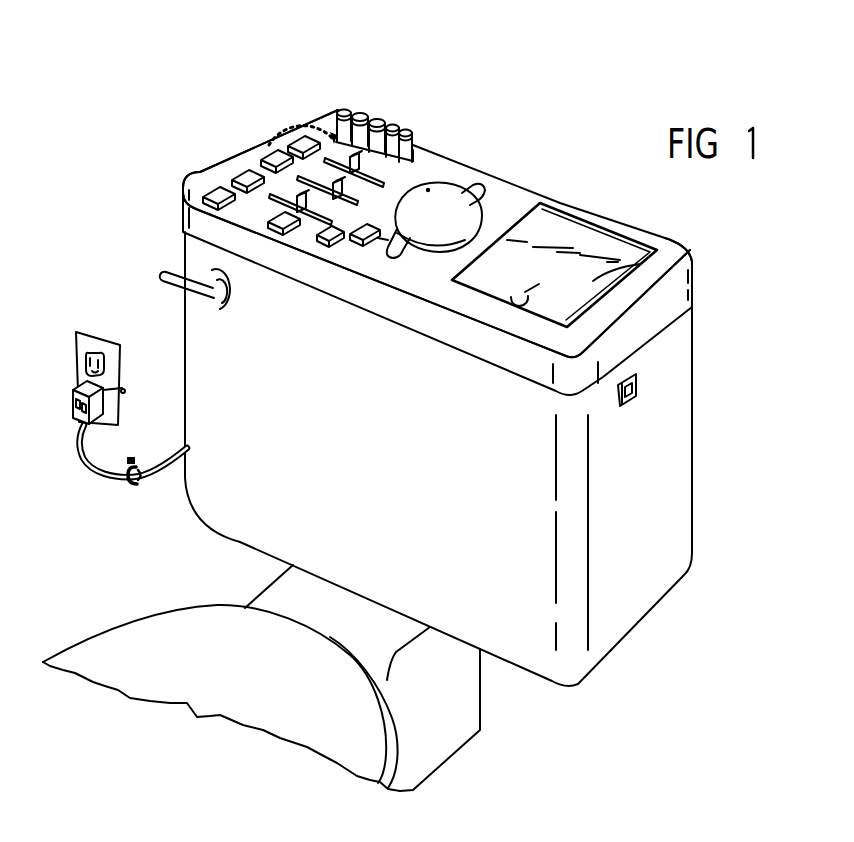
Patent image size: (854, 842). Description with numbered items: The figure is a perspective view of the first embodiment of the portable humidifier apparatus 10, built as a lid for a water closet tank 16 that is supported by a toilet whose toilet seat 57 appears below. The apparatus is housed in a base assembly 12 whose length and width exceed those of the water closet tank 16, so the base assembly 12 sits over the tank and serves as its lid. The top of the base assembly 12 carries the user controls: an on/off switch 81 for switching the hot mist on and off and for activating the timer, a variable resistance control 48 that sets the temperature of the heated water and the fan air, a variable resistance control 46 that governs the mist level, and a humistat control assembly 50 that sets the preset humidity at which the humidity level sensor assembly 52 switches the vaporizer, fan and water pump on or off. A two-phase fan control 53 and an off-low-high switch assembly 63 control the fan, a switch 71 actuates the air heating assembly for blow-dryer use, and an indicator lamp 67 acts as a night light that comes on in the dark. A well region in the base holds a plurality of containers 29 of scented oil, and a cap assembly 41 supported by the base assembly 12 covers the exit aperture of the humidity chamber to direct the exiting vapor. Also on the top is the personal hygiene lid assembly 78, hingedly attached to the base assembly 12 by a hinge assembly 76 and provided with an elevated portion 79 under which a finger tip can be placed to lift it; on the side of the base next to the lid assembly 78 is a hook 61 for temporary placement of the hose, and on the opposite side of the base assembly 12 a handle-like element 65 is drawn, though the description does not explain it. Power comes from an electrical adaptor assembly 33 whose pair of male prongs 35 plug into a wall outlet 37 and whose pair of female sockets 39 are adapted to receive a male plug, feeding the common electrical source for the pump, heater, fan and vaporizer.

The portable humidifier apparatus 10 is at (166, 54).
The base assembly 12 is at (703, 296).
The water closet tank 16 is at (642, 528).
The containers 29 is at (394, 126).
The electrical adaptor assembly 33 is at (66, 400).
The male prongs 35 is at (125, 388).
The wall outlet 37 is at (78, 338).
The female sockets 39 is at (75, 420).
The cap assembly 41 is at (447, 197).
The variable resistance control 46 is at (415, 149).
The variable resistance control 48 is at (330, 130).
The humistat control assembly 50 is at (188, 208).
The humidity level sensor assembly 52 is at (357, 233).
The two-phase fan control 53 is at (205, 195).
The toilet seat 57 is at (135, 652).
The hook 61 is at (690, 390).
The off-low-high switch assembly 63 is at (240, 162).
The carrying handle 65 is at (220, 308).
The indicator lamp 67 is at (292, 130).
The switch 71 is at (270, 233).
The hinge assembly 76 is at (612, 234).
The lid assembly 78 is at (691, 257).
The elevated portion 79 is at (525, 298).
The on/off switch 81 is at (263, 153).